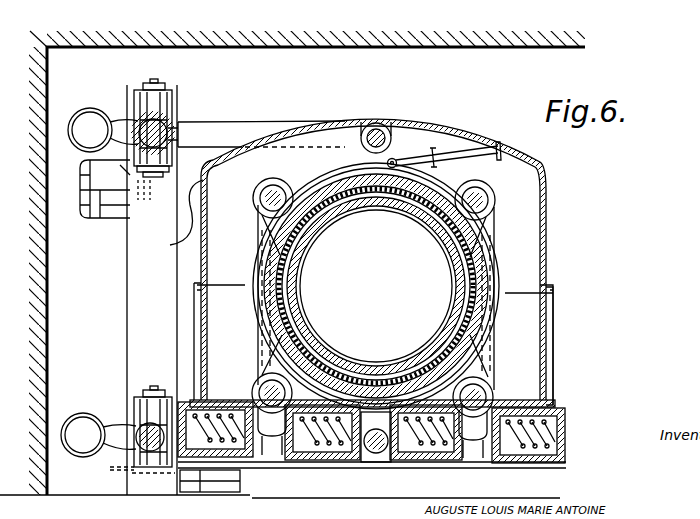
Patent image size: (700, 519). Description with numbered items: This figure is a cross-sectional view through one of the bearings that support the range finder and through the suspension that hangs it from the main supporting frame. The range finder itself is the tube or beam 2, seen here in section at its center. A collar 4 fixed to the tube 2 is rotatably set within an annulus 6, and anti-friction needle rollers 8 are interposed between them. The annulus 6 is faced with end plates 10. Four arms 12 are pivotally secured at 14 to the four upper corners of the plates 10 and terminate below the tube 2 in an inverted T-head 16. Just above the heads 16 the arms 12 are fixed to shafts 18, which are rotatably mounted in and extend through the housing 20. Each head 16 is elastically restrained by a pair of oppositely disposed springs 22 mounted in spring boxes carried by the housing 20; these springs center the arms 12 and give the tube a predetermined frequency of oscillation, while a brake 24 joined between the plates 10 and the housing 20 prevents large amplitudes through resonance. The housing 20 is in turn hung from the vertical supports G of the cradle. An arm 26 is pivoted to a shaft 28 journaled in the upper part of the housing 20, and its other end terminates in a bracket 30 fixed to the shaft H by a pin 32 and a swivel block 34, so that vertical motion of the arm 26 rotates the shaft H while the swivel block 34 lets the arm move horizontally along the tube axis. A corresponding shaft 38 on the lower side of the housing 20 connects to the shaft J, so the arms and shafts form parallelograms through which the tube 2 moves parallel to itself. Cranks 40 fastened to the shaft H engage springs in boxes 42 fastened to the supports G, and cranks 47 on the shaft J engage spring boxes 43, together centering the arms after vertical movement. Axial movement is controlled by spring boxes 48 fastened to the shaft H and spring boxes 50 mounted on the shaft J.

The tube or beam 2 is at (443, 248).
The collar 4 is at (341, 212).
The annulus 6 is at (337, 190).
The anti-friction needle rollers 8 is at (433, 205).
The end plates 10 is at (300, 185).
The arms 12 is at (259, 368).
The pivot 14 is at (261, 195).
The inverted T-head 16 is at (272, 440).
The shafts 18 is at (260, 393).
The housing 20 is at (549, 326).
The springs 22 is at (262, 463).
The brake 24 is at (460, 150).
The arms 26 is at (238, 133).
The shaft 28 is at (383, 124).
The bracket 30 is at (147, 93).
The pin 32 is at (160, 86).
The swivel block 34 is at (175, 97).
The shaft 38 is at (376, 455).
The cranks 40 is at (172, 221).
The spring boxes 42 is at (108, 210).
The spring boxes 43 is at (223, 490).
The cranks 47 is at (118, 488).
The spring boxes 48 is at (84, 118).
The spring boxes 50 is at (86, 414).
The supports G is at (132, 308).
The shaft H is at (180, 118).
The shaft J is at (130, 443).